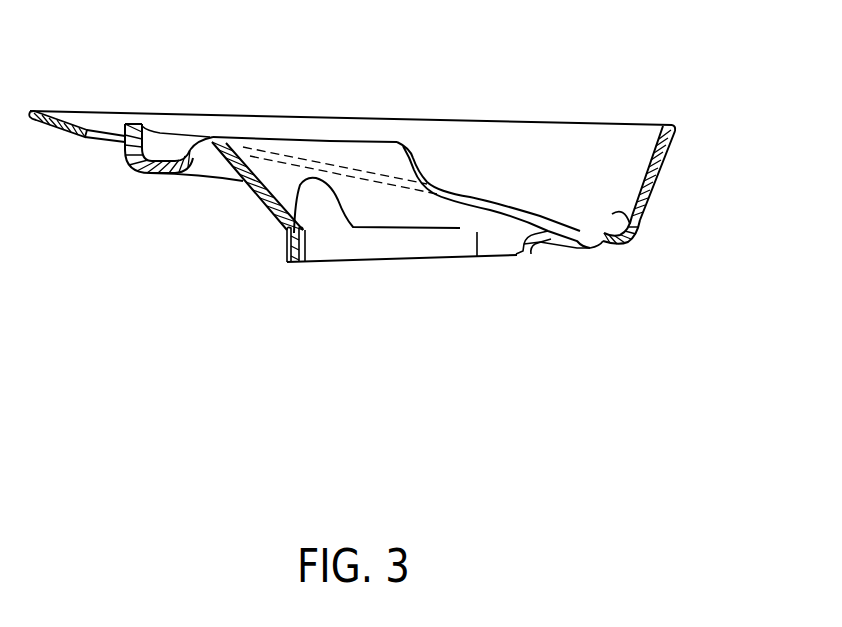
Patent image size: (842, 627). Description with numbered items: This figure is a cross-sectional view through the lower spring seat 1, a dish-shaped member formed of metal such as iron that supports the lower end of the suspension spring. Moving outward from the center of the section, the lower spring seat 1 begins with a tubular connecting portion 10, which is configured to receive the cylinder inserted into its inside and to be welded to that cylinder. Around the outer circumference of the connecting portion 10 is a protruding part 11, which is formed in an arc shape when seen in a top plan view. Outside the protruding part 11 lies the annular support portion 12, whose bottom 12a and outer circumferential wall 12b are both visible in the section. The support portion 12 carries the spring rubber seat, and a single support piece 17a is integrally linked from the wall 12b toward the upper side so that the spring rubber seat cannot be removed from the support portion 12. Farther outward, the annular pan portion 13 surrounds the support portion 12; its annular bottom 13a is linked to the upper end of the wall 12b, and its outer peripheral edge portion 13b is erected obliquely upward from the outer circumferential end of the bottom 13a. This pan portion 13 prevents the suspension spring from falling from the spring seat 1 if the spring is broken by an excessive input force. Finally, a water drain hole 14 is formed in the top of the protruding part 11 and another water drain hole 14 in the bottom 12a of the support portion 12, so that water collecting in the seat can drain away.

The lower spring seat 1 is at (703, 112).
The connecting portion 10 is at (287, 253).
The protruding part 11 is at (332, 128).
The support portion 12 is at (163, 186).
The bottom of the support portion 12a is at (173, 152).
The outer circumferential wall 12b is at (506, 205).
The pan portion 13 is at (642, 258).
The annular bottom 13a is at (643, 215).
The outer peripheral edge portion 13b is at (622, 150).
The water drain hole 14 is at (213, 138).
The support piece 17a is at (108, 110).